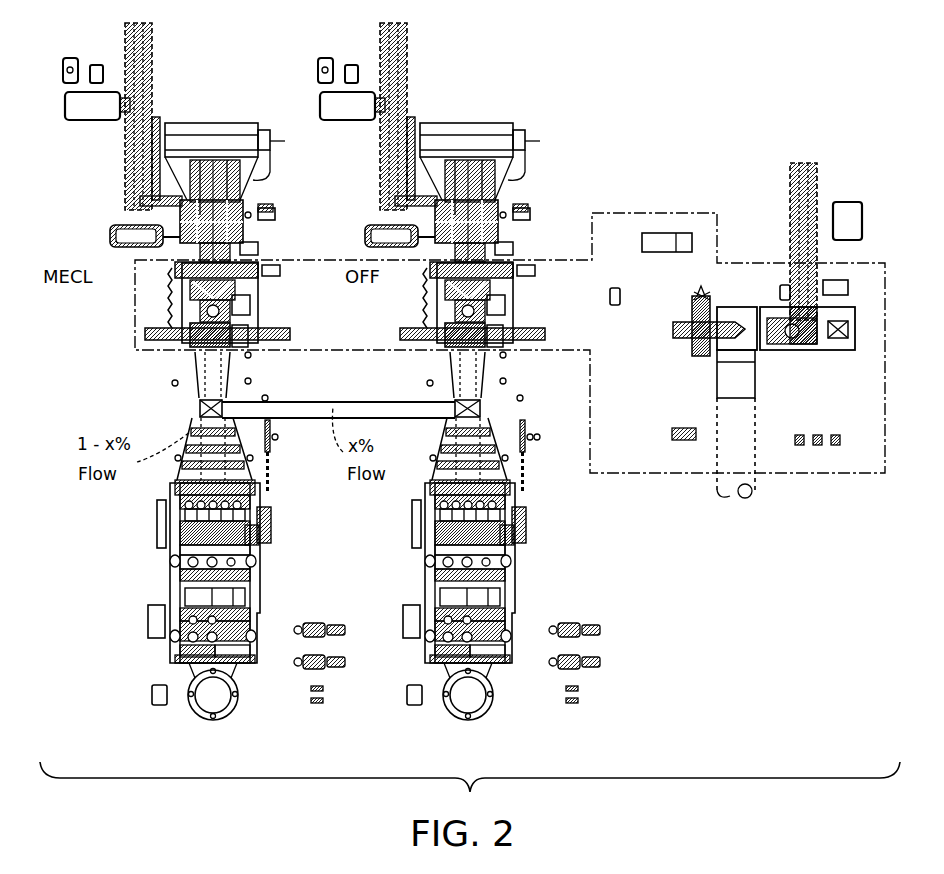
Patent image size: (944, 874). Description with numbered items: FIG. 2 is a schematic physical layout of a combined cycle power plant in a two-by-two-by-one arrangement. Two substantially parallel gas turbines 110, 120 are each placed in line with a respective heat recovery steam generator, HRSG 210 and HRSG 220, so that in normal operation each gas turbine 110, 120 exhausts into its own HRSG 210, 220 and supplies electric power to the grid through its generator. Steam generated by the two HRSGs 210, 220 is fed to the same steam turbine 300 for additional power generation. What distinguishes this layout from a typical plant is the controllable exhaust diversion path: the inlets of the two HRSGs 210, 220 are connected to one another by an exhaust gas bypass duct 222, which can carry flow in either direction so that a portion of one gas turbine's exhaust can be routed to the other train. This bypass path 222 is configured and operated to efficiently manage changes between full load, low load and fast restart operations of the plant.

The gas turbine 110 is at (107, 245).
The gas turbine 120 is at (362, 245).
The heat recovery steam generator 210 is at (145, 623).
The heat recovery steam generator 220 is at (400, 623).
The exhaust gas bypass duct 222 is at (360, 397).
The steam turbine 300 is at (667, 342).